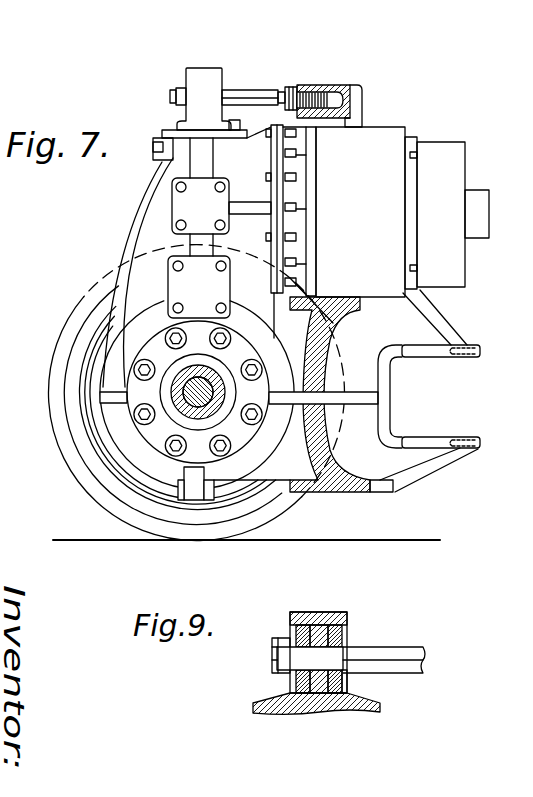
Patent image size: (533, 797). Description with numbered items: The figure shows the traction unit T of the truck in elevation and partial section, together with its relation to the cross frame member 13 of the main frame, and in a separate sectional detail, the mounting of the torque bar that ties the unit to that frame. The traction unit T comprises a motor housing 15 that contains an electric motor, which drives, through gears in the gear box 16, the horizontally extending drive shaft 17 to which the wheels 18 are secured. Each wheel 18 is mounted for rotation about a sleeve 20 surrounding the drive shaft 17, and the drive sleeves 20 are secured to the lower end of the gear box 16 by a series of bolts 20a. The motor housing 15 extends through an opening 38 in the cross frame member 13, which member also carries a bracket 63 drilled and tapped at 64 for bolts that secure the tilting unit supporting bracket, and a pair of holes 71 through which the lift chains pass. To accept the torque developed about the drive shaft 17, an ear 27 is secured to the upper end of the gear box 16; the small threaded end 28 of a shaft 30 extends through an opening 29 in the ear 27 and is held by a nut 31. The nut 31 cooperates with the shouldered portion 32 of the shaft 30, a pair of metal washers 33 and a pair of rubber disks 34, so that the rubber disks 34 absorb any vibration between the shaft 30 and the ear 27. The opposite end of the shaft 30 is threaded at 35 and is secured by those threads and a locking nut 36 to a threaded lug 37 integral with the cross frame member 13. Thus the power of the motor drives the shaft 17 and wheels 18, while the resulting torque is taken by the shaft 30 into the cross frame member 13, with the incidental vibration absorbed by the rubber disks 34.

In FIG. 7, the cross frame member 13 is at (430, 303).
In FIG. 7, the motor housing 15 is at (458, 156).
In FIG. 7, the gear box 16 is at (140, 237).
In FIG. 7, the drive shaft 17 is at (204, 382).
In FIG. 7, the wheels 18 is at (80, 468).
In FIG. 7, the sleeves 20 is at (213, 412).
In FIG. 7, the bolts 20a is at (141, 360).
In FIG. 7, the ear 27 is at (215, 68).
In FIG. 9, the ear 27 is at (347, 613).
In FIG. 9, the threaded end 28 is at (336, 656).
In FIG. 9, the opening 29 is at (318, 640).
In FIG. 7, the shaft 30 is at (245, 92).
In FIG. 9, the shaft 30 is at (418, 653).
In FIG. 7, the nut 31 is at (182, 86).
In FIG. 9, the nut 31 is at (274, 640).
In FIG. 9, the shouldered portion 32 is at (347, 680).
In FIG. 9, the metal washers 33 is at (292, 685).
In FIG. 9, the rubber disks 34 is at (305, 627).
In FIG. 7, the threads 35 is at (322, 87).
In FIG. 7, the locking nut 36 is at (290, 90).
In FIG. 7, the threaded lug 37 is at (360, 85).
In FIG. 7, the opening 38 is at (358, 126).
In FIG. 7, the bracket 63 is at (435, 358).
In FIG. 7, the drilled and tapped holes 64 is at (472, 357).
In FIG. 7, the holes 71 is at (332, 350).
In FIG. 7, the traction unit T is at (444, 128).